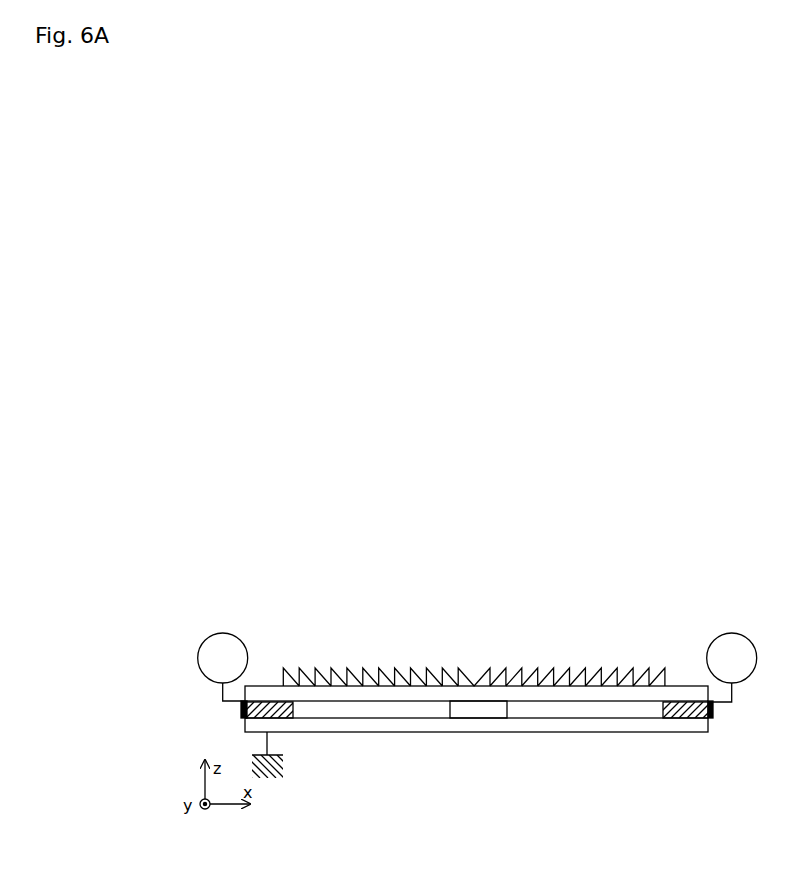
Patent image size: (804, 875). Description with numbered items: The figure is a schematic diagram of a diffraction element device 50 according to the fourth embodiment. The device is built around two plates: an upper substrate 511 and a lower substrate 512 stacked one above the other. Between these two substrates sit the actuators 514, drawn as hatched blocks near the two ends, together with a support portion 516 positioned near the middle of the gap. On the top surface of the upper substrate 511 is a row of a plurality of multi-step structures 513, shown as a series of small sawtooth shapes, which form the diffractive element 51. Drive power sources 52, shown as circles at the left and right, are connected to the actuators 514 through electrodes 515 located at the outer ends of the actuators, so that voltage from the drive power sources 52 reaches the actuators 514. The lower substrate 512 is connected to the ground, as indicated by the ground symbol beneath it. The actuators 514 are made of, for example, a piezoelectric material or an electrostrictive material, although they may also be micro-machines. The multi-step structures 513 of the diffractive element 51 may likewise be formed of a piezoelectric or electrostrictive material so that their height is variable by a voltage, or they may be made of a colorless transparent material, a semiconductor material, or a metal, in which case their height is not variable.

The diffraction element device 50 is at (467, 570).
The diffractive element 51 is at (360, 600).
The drive power source 52 is at (205, 637).
The upper substrate 511 is at (685, 687).
The lower substrate 512 is at (560, 727).
The multi-step structure 513 is at (658, 655).
The actuator 514 is at (280, 718).
The electrode 515 is at (240, 705).
The support portion 516 is at (470, 713).